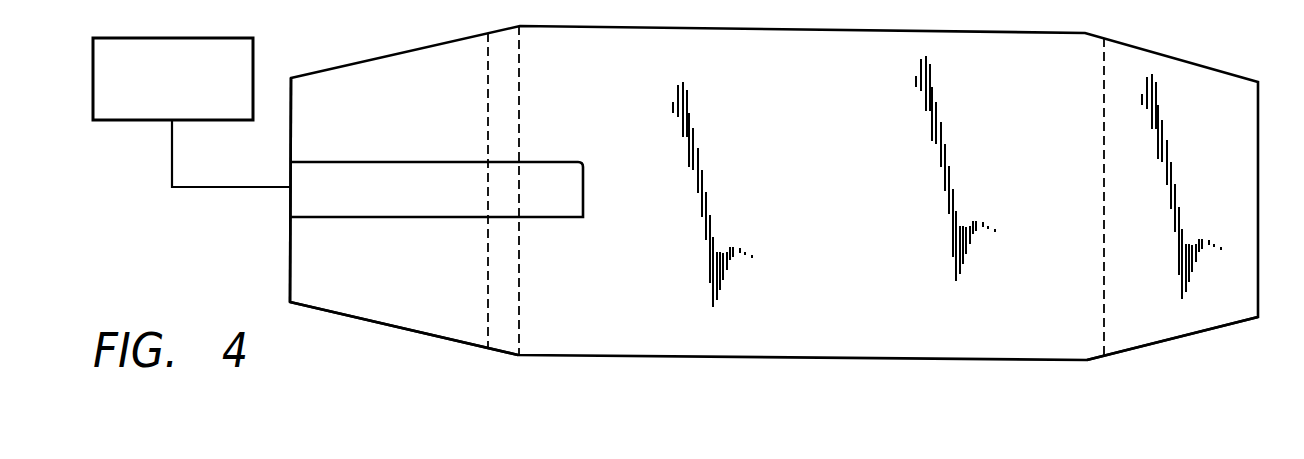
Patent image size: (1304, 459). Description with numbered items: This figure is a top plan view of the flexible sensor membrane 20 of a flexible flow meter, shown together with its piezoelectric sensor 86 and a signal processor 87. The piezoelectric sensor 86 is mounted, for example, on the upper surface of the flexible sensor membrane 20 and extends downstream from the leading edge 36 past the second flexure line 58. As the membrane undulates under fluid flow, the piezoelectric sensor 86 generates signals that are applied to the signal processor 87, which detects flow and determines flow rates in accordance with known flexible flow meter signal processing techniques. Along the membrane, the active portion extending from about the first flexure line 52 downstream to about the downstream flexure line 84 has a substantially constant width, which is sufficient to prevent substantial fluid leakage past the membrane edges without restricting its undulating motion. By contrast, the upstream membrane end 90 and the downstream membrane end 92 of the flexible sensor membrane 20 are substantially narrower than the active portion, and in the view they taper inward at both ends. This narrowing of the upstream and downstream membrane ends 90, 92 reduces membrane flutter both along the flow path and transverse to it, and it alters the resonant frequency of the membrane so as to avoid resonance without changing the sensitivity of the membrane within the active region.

The flexible sensor membrane 20 is at (885, 193).
The leading edge 36 is at (290, 250).
The first flexure line 52 is at (519, 133).
The second flexure line 58 is at (488, 252).
The downstream flexure line 84 is at (1104, 258).
The piezoelectric sensor 86 is at (393, 161).
The signal processor 87 is at (93, 78).
The upstream membrane end 90 is at (408, 330).
The downstream membrane end 92 is at (1192, 335).